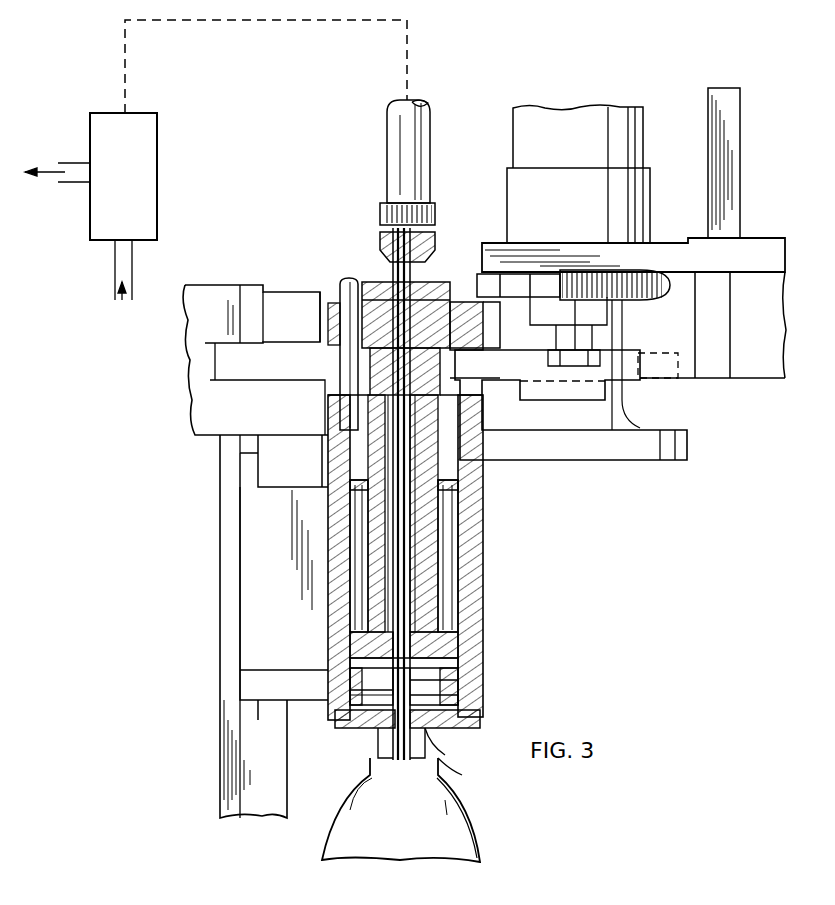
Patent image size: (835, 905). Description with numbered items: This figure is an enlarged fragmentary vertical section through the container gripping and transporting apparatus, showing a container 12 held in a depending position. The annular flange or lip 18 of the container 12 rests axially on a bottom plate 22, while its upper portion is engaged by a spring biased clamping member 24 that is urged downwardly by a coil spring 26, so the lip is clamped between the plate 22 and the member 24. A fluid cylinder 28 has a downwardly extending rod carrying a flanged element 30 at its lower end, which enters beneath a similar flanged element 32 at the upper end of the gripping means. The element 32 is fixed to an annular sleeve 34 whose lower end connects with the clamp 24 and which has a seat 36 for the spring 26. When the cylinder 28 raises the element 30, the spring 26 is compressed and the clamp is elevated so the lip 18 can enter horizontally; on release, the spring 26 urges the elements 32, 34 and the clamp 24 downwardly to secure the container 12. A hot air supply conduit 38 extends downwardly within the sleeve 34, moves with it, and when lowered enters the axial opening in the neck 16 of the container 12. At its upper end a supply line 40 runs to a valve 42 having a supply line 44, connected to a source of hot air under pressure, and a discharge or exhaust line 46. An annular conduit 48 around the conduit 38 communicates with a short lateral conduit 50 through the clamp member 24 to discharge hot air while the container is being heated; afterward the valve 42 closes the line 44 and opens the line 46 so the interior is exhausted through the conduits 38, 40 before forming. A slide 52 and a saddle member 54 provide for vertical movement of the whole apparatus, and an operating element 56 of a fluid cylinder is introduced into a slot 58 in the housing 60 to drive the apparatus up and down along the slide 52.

The container 12 is at (470, 818).
The neck 16 is at (450, 758).
The annular flange or lip 18 is at (440, 728).
The bottom plate 22 is at (452, 716).
The clamping member 24 is at (460, 662).
The coil spring 26 is at (445, 638).
The fluid cylinder 28 is at (592, 213).
The flanged element 30 is at (465, 355).
The flanged element 32 is at (338, 303).
The annular sleeve 34 is at (385, 284).
The seat 36 is at (352, 642).
The supply conduit 38 is at (388, 750).
The supply line 40 is at (410, 157).
The valve 42 is at (135, 146).
The supply line 44 is at (125, 263).
The discharge or exhaust line 46 is at (70, 163).
The annular conduit 48 is at (380, 742).
The lateral conduit 50 is at (460, 682).
The slide 52 is at (222, 618).
The saddle member 54 is at (255, 562).
The operating element 56 is at (656, 438).
The slot 58 is at (468, 456).
The housing 60 is at (470, 537).